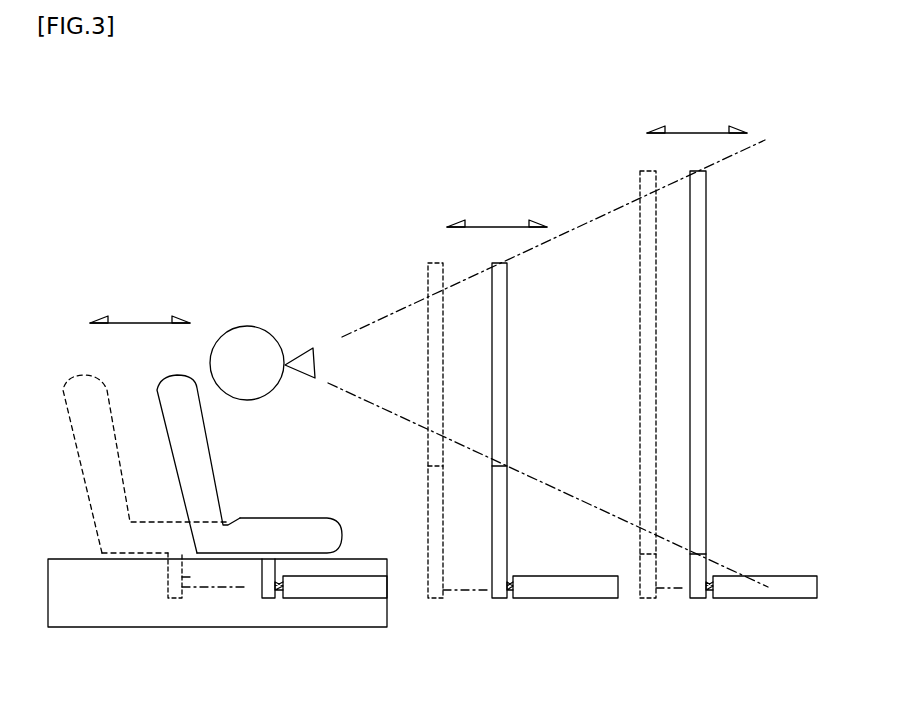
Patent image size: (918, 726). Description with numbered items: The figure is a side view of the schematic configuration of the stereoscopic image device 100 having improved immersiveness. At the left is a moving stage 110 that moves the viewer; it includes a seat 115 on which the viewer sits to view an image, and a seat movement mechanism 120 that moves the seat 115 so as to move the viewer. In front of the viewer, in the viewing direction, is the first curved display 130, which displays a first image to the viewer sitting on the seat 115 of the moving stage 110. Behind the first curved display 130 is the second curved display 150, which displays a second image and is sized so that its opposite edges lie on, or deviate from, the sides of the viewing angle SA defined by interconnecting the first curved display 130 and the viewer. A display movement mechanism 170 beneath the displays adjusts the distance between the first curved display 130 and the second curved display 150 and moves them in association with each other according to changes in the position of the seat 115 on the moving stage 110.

The stereoscopic image device 100 is at (338, 158).
The moving stage 110 is at (112, 615).
The seat 115 is at (264, 537).
The seat movement mechanism 120 is at (323, 588).
The first curved display 130 is at (508, 317).
The second curved display 150 is at (706, 255).
The display movement mechanism 170 is at (737, 588).
The viewing angle SA is at (324, 356).